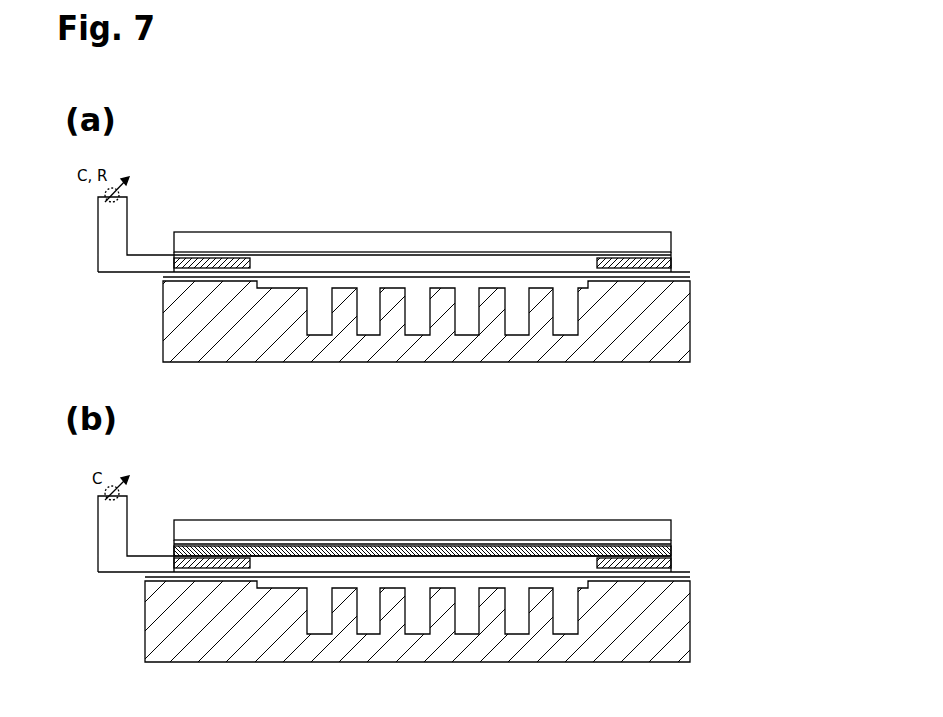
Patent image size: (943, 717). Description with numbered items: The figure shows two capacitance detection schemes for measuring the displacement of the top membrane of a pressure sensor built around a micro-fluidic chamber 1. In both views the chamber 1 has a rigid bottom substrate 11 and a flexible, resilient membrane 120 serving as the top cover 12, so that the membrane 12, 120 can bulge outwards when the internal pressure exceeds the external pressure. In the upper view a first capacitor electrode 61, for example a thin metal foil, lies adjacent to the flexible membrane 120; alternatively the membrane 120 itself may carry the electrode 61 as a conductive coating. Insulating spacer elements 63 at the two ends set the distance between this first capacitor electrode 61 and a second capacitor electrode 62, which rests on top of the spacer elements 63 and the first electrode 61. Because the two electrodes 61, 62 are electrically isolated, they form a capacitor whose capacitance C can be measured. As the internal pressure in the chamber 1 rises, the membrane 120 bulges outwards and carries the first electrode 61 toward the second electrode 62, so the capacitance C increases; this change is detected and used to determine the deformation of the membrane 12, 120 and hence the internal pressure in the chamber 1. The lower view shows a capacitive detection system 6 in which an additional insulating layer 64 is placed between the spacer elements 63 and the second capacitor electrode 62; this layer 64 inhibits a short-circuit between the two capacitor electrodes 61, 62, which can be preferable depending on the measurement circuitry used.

The micro-fluidic chamber 1 is at (712, 325).
The bottom substrate 11 is at (623, 312).
The top cover 12 is at (417, 379).
The flexible membrane 120 is at (380, 277).
The capacitive detection system 6 is at (386, 203).
The first capacitor electrode 61 is at (468, 272).
The second capacitor electrode 62 is at (533, 255).
The insulating spacer elements 63 is at (197, 258).
The additional insulating layer 64 is at (263, 548).